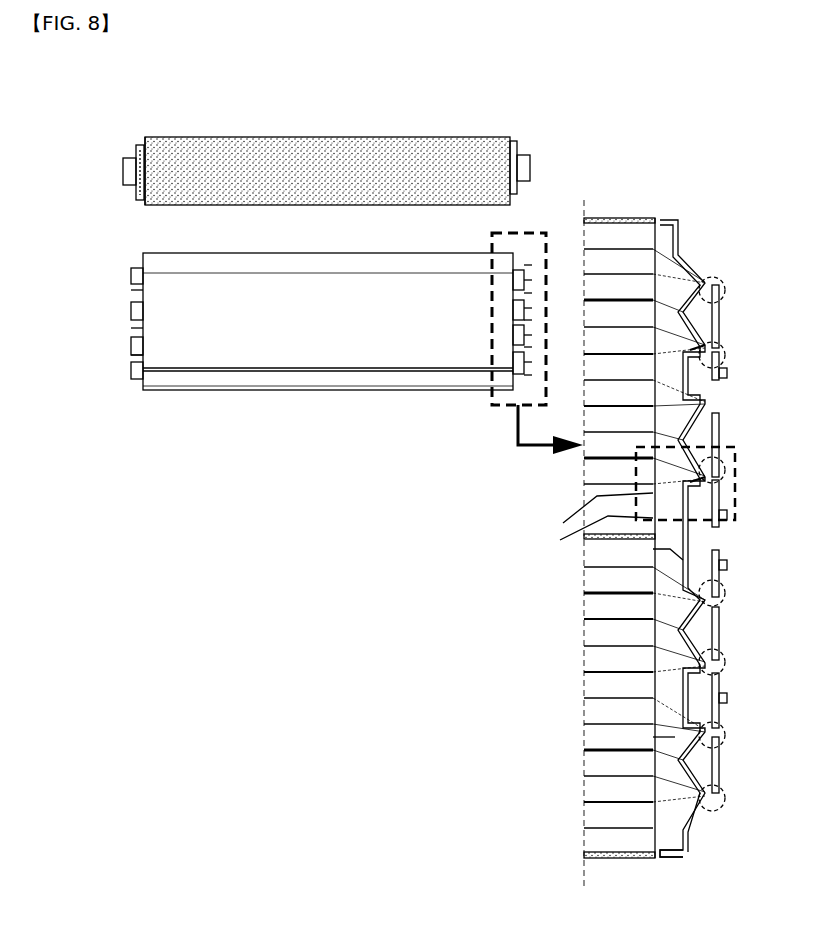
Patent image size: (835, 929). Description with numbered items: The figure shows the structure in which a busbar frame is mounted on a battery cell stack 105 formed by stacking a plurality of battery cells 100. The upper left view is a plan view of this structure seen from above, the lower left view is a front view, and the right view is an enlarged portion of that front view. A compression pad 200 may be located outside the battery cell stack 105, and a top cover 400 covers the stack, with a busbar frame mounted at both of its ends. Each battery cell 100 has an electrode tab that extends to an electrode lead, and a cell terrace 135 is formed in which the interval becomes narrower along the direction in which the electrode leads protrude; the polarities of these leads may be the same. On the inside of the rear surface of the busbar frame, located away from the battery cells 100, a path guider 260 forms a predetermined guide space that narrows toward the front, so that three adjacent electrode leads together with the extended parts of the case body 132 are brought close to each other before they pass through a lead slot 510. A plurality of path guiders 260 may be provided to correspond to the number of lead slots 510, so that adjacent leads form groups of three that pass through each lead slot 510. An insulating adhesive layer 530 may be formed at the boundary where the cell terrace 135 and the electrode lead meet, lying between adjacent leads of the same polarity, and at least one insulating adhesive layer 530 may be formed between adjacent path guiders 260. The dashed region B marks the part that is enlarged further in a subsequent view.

The battery cell 100 is at (597, 688).
The battery cell stack 105 is at (566, 778).
The case body 132 is at (613, 566).
The cell terrace 135 is at (660, 737).
The compression pad 200 is at (331, 157).
The path guider 260 is at (700, 553).
The top cover 400 is at (338, 346).
The lead slot 510 is at (716, 396).
The insulating adhesive layer 530 is at (735, 506).
The region B is at (738, 458).